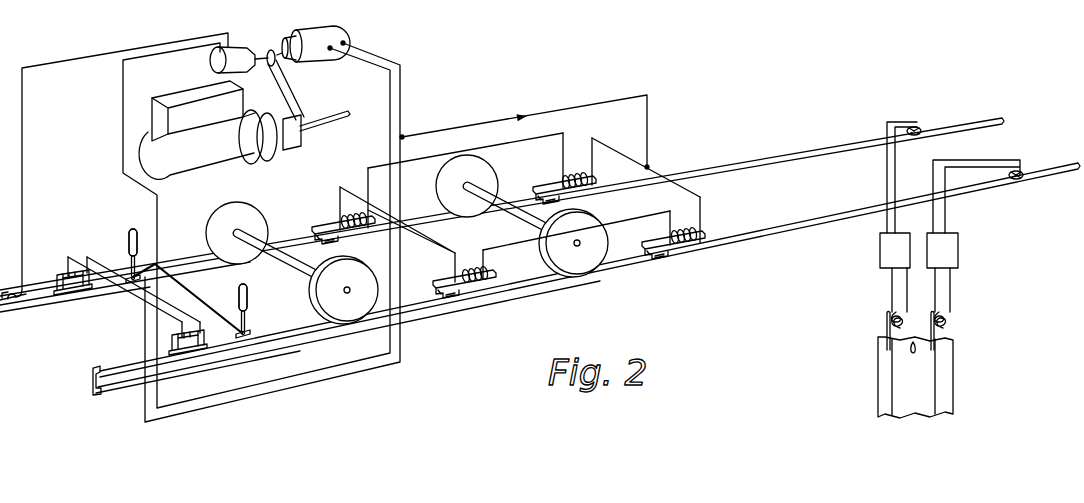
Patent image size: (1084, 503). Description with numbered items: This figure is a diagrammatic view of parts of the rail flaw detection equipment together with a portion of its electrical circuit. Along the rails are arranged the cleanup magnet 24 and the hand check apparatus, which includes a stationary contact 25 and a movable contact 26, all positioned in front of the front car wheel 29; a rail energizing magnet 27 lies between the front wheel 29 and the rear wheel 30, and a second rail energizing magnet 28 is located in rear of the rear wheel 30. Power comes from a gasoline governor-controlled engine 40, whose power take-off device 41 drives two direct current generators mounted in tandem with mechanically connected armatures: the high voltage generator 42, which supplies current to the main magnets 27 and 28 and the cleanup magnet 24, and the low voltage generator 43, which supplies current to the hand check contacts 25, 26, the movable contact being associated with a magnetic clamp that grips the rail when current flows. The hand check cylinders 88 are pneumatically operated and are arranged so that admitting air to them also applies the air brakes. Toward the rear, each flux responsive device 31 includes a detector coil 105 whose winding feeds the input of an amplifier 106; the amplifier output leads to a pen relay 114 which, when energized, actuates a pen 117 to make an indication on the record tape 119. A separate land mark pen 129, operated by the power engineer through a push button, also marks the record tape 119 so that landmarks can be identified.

The cleanup magnet 24 is at (78, 285).
The stationary contact 25 is at (131, 275).
The movable contact 26 is at (10, 296).
The rail energizing magnet 27 is at (335, 217).
The rail energizing magnet 28 is at (560, 179).
The front car wheel 29 is at (352, 312).
The rear wheel 30 is at (582, 264).
The flux responsive device 31 is at (936, 104).
The gasoline governor-controlled engine 40 is at (175, 94).
The power take-off device 41 is at (297, 137).
The direct current generator 42 is at (322, 35).
The direct current generator 43 is at (243, 53).
The hand check cylinder 88 is at (131, 231).
The detector coil 105 is at (916, 136).
The amplifier 106 is at (919, 272).
The pen relay 114 is at (910, 317).
The pen 117 is at (886, 324).
The record tape 119 is at (878, 389).
The pen 129 is at (914, 346).